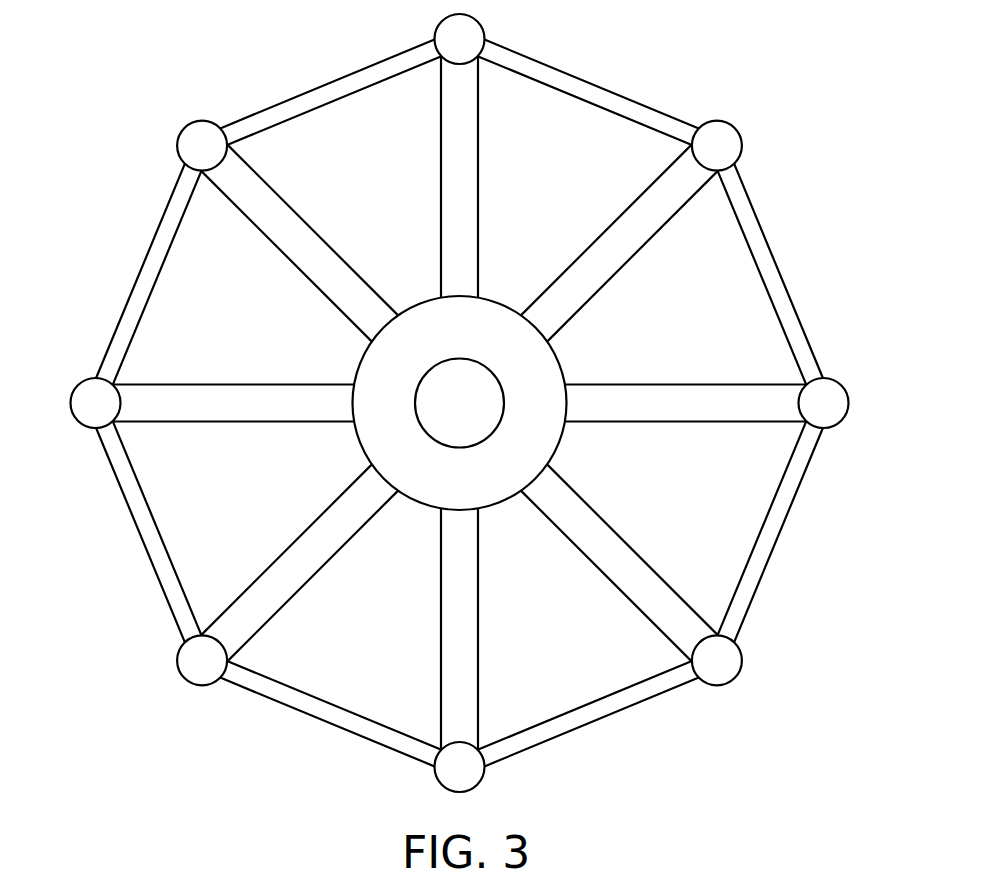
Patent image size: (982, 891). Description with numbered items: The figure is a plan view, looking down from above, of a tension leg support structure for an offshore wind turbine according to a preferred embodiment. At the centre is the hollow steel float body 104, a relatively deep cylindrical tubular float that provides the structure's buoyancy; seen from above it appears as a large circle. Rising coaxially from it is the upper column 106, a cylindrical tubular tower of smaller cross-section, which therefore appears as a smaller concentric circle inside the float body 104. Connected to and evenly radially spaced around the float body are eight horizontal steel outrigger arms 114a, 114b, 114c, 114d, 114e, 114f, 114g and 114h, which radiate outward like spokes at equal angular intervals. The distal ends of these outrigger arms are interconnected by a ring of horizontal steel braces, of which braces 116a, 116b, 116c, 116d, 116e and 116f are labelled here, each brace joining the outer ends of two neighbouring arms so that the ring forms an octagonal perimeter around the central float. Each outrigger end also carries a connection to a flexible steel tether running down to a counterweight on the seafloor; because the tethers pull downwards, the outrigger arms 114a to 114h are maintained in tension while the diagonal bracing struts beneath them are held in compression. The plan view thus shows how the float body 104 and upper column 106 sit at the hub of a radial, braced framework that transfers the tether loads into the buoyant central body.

The float body 104 is at (412, 494).
The upper column 106 is at (458, 435).
The outrigger arm 114a is at (220, 417).
The outrigger arm 114b is at (295, 588).
The outrigger arm 114c is at (473, 643).
The outrigger arm 114d is at (633, 563).
The outrigger arm 114e is at (680, 390).
The outrigger arm 114f is at (613, 233).
The outrigger arm 114g is at (453, 169).
The outrigger arm 114h is at (283, 242).
The horizontal steel brace 116a is at (150, 542).
The horizontal steel brace 116b is at (328, 717).
The horizontal steel brace 116c is at (583, 722).
The horizontal steel brace 116d is at (767, 550).
The horizontal steel brace 116e is at (772, 270).
The horizontal steel brace 116f is at (605, 93).